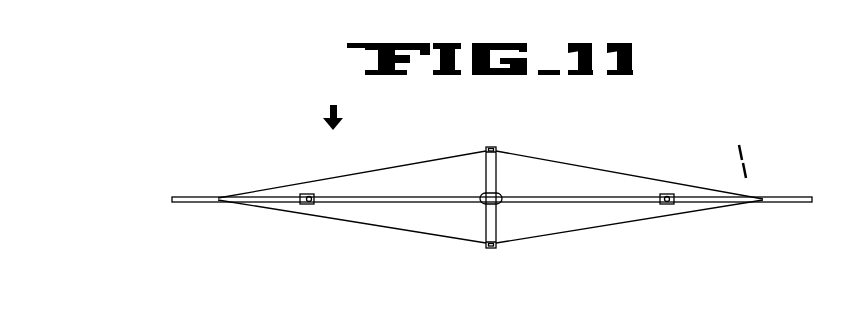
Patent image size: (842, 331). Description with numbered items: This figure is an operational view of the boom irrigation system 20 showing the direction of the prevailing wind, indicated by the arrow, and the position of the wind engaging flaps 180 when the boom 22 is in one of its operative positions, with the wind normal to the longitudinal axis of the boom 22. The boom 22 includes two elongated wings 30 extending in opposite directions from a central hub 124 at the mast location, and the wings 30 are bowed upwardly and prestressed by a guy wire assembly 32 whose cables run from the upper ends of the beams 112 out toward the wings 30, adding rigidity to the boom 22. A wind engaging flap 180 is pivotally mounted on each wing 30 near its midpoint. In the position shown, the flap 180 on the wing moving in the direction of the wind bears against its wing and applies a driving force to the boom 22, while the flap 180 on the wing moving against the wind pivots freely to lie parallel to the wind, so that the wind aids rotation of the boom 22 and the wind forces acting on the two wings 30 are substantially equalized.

The boom irrigation system 20 is at (244, 142).
The rotary boom 22 is at (781, 195).
The elongated wings 30 is at (379, 204).
The guy wire assembly 32 is at (550, 160).
The beams 112 is at (486, 215).
The central hub 124 is at (504, 196).
The wind engaging flaps 180 is at (306, 193).